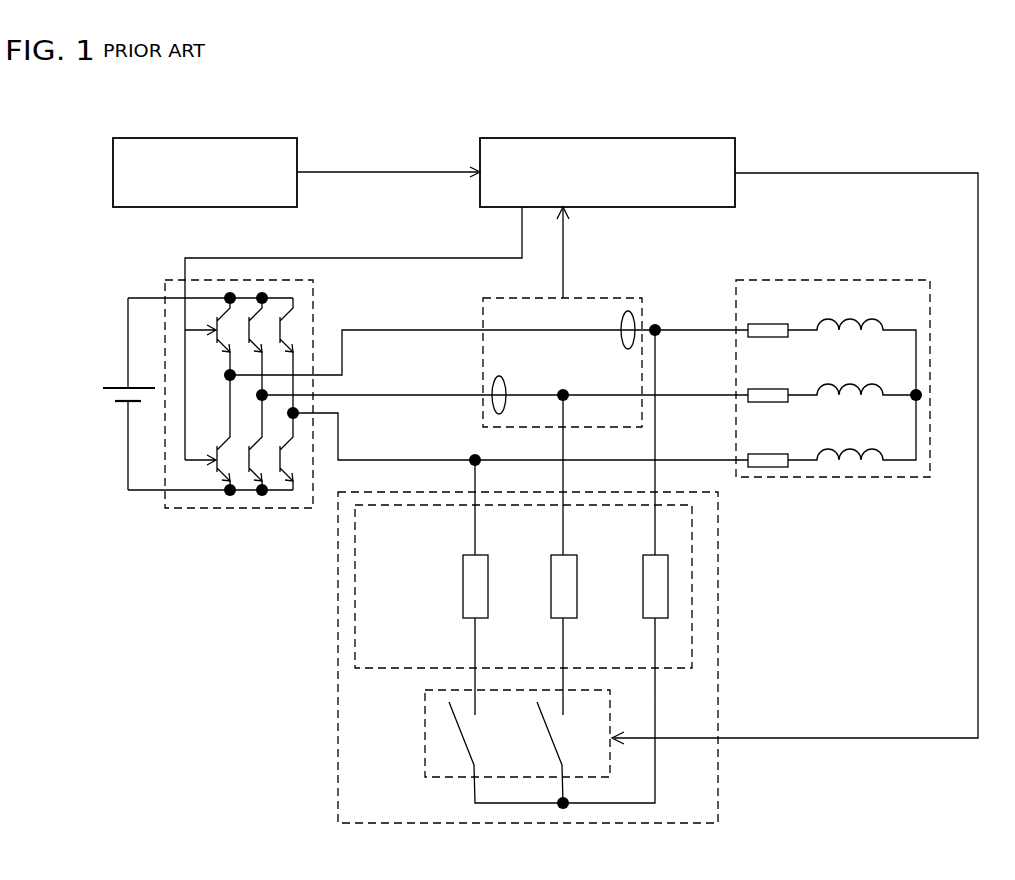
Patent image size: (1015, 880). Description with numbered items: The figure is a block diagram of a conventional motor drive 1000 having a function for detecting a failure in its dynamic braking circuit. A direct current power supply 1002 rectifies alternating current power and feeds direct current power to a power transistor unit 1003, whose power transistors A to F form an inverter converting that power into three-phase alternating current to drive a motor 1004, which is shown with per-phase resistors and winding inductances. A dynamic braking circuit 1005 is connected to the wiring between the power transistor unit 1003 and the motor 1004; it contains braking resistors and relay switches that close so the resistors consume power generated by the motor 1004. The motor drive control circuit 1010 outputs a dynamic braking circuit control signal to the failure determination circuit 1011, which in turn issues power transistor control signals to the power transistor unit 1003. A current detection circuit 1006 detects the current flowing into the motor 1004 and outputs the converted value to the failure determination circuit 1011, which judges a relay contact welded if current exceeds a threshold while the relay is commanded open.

The motor drive 1000 is at (742, 123).
The direct current power supply 1002 is at (112, 410).
The power transistor unit 1003 is at (315, 312).
The motor 1004 is at (815, 280).
The dynamic braking circuit 1005 is at (722, 668).
The current detection circuit 1006 is at (530, 298).
The motor drive control circuit 1010 is at (262, 138).
The failure determination circuit 1011 is at (606, 138).